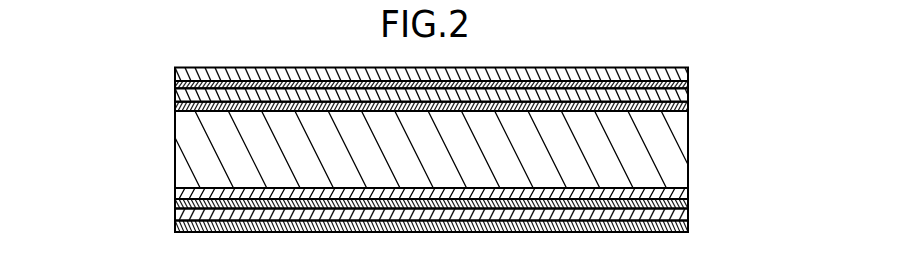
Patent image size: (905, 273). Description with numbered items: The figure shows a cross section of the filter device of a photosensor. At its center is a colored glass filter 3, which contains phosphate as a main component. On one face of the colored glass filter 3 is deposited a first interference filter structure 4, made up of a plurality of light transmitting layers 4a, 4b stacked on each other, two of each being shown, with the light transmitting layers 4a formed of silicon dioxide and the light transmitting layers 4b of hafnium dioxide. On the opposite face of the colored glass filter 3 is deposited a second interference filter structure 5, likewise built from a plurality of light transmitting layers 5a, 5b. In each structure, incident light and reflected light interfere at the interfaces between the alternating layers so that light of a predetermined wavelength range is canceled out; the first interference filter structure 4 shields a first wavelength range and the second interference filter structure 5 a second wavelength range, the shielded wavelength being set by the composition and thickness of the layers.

The colored glass filter 3 is at (682, 137).
The first interference filter structure 4 is at (432, 90).
The light transmitting layer 4a is at (688, 84).
The light transmitting layer 4b is at (175, 74).
The second interference filter structure 5 is at (434, 215).
The light transmitting layer 5a is at (688, 191).
The light transmitting layer 5b is at (175, 204).